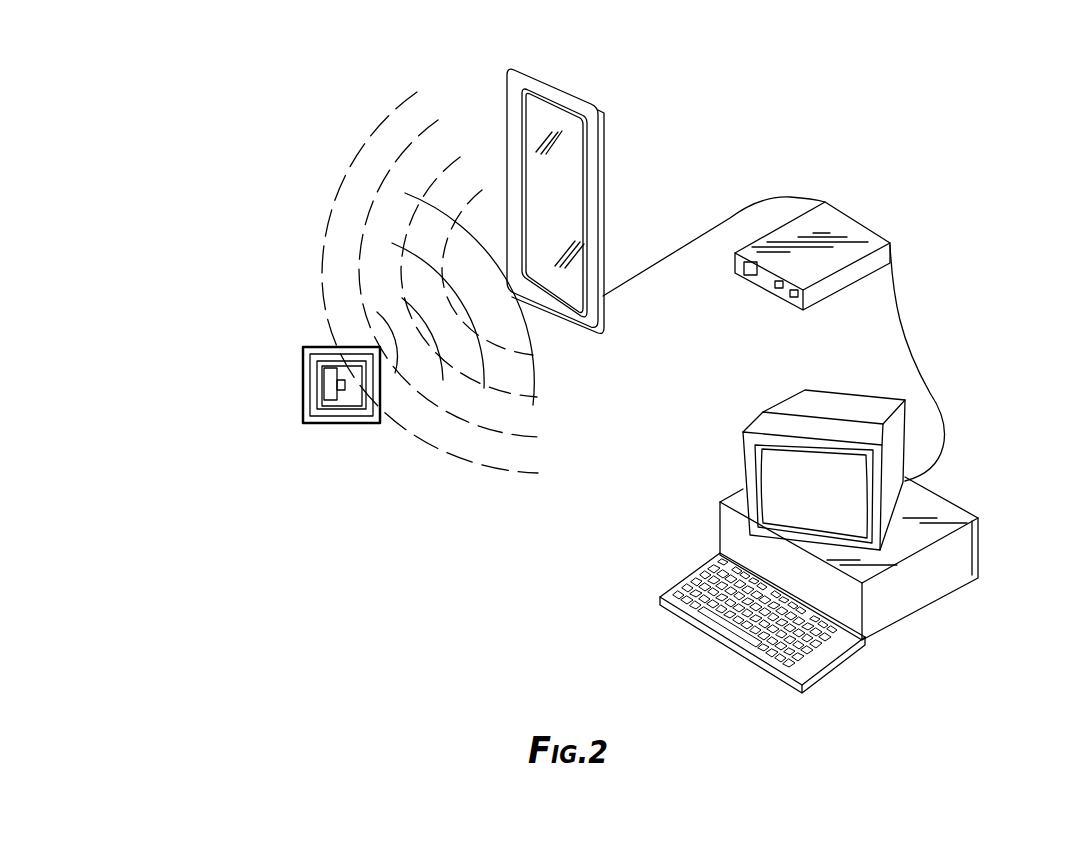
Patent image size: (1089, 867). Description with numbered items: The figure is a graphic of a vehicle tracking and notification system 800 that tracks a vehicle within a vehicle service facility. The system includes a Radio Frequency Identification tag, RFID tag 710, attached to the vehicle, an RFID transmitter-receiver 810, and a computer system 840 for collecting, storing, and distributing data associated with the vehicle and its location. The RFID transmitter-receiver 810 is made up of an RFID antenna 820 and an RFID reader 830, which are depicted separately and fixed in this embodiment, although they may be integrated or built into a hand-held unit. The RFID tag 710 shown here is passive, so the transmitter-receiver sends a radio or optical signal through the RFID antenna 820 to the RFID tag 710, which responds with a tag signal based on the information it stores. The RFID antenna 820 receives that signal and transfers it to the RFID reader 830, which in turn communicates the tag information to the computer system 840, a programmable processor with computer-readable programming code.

The vehicle tracking and notification system 800 is at (280, 113).
The RFID tag 710 is at (302, 392).
The RFID antenna 820 is at (567, 87).
The RFID transmitter-receiver 810 is at (745, 172).
The RFID reader 830 is at (858, 221).
The computer system 840 is at (935, 600).